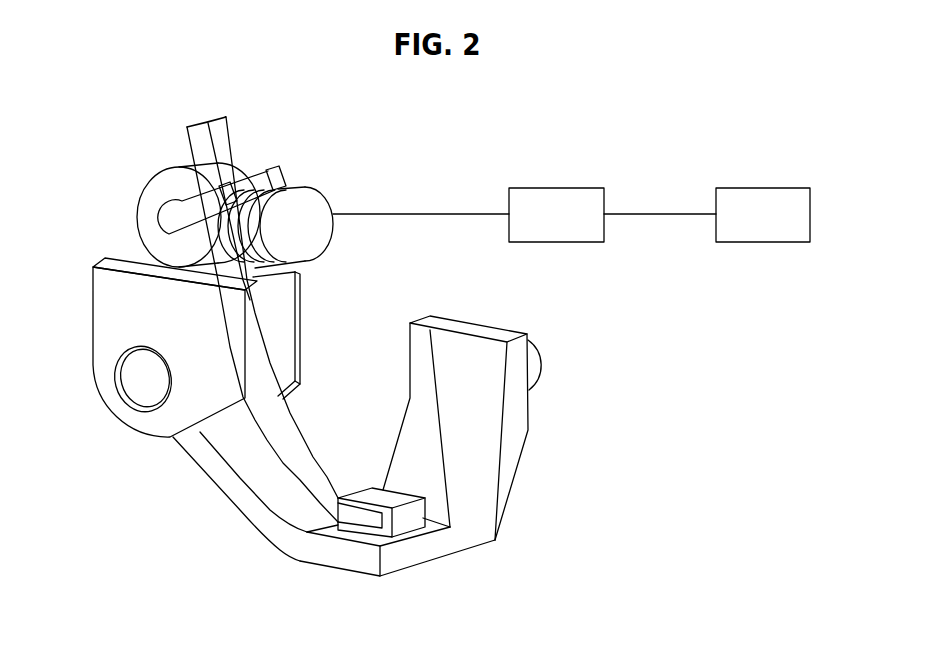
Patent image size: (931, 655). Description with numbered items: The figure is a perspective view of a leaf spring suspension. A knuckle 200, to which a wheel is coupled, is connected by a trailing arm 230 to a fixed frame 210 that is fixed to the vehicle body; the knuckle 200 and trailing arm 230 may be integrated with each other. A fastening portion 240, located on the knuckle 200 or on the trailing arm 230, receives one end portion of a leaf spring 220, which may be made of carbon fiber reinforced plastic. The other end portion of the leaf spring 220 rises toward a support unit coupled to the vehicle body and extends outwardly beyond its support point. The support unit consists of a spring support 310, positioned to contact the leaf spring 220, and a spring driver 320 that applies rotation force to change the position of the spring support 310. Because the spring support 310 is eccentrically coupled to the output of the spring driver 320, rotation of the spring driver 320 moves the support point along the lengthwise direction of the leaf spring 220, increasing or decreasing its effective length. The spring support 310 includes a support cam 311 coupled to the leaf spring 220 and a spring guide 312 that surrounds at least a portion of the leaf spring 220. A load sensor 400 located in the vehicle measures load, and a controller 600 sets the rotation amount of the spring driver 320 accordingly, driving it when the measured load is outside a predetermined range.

The knuckle 200 is at (512, 453).
The fixed frame 210 is at (103, 368).
The leaf spring 220 is at (262, 382).
The trailing arm 230 is at (235, 497).
The fastening portion 240 is at (405, 523).
The spring support 310 is at (173, 167).
The support cam 311 is at (152, 193).
The spring guide 312 is at (283, 170).
The spring driver 320 is at (320, 185).
The load sensor 400 is at (764, 188).
The controller 600 is at (557, 188).